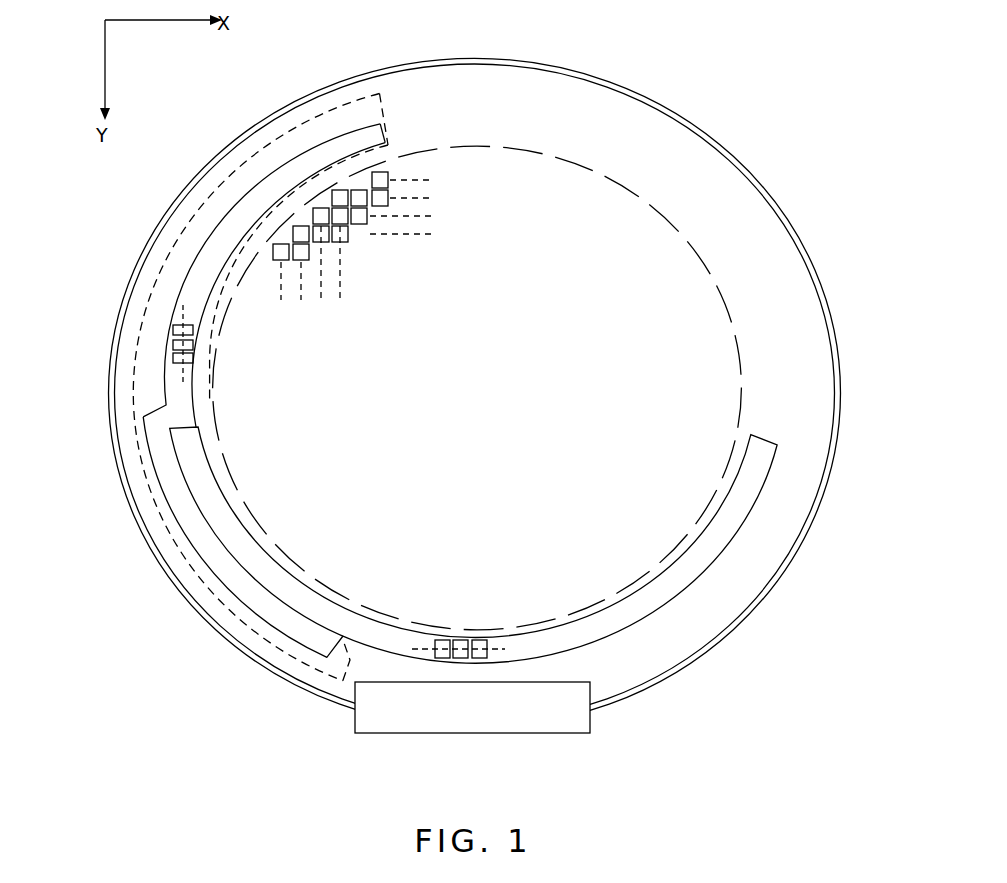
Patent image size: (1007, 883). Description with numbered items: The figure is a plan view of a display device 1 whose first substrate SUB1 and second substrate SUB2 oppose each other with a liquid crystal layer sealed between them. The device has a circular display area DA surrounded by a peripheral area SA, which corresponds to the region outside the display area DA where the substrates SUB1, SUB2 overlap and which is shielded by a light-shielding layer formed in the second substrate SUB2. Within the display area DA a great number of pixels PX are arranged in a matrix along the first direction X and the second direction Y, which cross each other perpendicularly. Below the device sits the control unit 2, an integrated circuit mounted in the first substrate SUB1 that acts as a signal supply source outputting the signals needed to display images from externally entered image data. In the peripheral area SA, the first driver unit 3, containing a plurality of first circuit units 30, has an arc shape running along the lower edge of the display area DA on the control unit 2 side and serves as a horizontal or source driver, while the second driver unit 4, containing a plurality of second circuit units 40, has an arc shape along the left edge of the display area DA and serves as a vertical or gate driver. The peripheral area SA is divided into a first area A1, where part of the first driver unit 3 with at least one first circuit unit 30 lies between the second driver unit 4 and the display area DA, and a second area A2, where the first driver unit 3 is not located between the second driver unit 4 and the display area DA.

The display device 1 is at (688, 64).
The control unit 2 is at (560, 733).
The first driver unit 3 is at (668, 602).
The second driver unit 4 is at (183, 286).
The first circuit unit 30 is at (461, 640).
The second circuit unit 40 is at (197, 363).
The pixel PX is at (382, 178).
The display area DA is at (652, 203).
The peripheral area SA is at (745, 253).
The first area A1 is at (153, 493).
The second area A2 is at (140, 375).
The first substrate SUB1 is at (217, 632).
The second substrate SUB2 is at (282, 673).